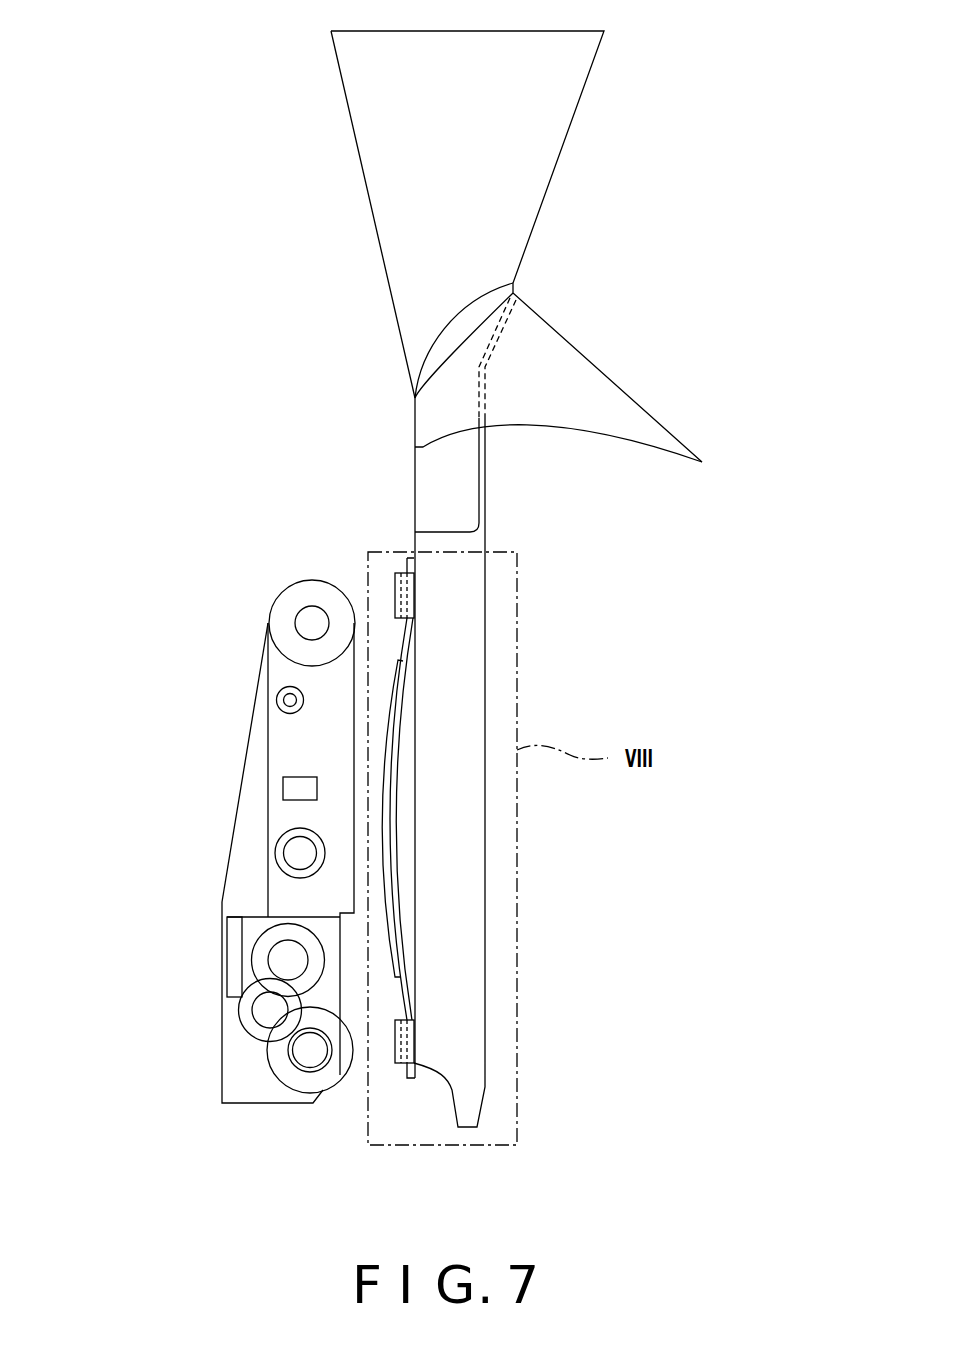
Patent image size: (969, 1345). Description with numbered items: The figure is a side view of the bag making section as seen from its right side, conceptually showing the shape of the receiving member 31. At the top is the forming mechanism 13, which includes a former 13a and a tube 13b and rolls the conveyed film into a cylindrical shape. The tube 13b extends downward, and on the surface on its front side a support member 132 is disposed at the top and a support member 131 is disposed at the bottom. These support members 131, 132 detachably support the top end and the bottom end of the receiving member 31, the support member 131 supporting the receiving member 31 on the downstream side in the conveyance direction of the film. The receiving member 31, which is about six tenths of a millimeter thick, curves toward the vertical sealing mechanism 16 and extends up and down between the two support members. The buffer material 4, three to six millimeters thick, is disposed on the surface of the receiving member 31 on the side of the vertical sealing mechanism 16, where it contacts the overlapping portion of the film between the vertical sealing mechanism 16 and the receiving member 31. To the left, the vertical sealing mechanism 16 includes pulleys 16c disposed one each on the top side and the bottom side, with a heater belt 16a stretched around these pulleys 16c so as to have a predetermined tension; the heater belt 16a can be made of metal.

The buffer material 4 is at (382, 795).
The forming mechanism 13 is at (520, 579).
The former 13a is at (523, 395).
The tube 13b is at (472, 610).
The vertical sealing mechanism 16 is at (196, 822).
The heater belt 16a is at (353, 728).
The pulleys 16c is at (293, 613).
The receiving member 31 is at (398, 707).
The support member 131 is at (395, 1057).
The support member 132 is at (398, 573).